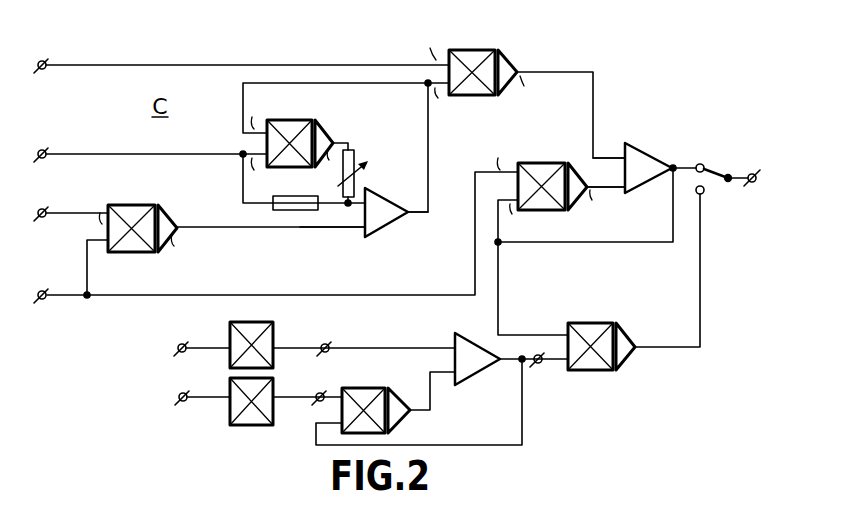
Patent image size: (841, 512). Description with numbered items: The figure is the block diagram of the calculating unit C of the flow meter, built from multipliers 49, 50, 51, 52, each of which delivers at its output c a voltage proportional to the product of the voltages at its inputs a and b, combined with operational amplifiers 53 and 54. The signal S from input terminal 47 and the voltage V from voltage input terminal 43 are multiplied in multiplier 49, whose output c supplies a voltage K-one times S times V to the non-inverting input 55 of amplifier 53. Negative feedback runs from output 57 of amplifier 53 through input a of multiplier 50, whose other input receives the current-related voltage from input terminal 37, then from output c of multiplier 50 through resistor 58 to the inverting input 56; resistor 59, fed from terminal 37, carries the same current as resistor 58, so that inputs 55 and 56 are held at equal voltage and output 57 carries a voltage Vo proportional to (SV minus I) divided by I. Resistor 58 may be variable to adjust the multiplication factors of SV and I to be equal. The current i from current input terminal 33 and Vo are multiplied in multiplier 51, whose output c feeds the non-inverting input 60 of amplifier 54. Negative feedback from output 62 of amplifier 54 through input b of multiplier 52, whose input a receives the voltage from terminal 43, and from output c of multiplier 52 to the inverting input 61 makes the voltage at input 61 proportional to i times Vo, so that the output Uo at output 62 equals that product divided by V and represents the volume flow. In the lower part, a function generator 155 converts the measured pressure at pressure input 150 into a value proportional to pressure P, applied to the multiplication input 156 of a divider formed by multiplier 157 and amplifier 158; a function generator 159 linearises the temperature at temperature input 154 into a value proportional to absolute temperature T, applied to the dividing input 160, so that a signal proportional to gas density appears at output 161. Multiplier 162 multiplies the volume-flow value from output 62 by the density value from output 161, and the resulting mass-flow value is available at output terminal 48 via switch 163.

The current input terminal 33 is at (46, 60).
The input terminal 37 is at (46, 149).
The input terminal 47 is at (47, 208).
The voltage input terminal 43 is at (47, 290).
The output terminal 48 is at (746, 171).
The multiplier 49 is at (145, 203).
The multiplier 50 is at (295, 119).
The multiplier 51 is at (478, 49).
The multiplier 52 is at (550, 161).
The operational amplifier 53 is at (393, 197).
The operational amplifier 54 is at (648, 155).
The non-inverting input of amplifier 53 55 is at (358, 228).
The inverting input of amplifier 53 56 is at (372, 183).
The output of amplifier 53 57 is at (410, 217).
The resistor 58 is at (340, 178).
The resistor 59 is at (313, 210).
The non-inverting input of amplifier 54 60 is at (607, 155).
The inverting input of amplifier 54 61 is at (613, 189).
The output of amplifier 54 62 is at (688, 162).
The pressure input 150 is at (178, 341).
The temperature input 154 is at (178, 396).
The function generator 155 is at (266, 338).
The multiplication input 156 is at (330, 338).
The multiplier 157 is at (367, 387).
The amplifier 158 is at (478, 336).
The function generator 159 is at (256, 415).
The dividing input 160 is at (317, 392).
The output of divider 161 is at (541, 366).
The multiplier 162 is at (595, 321).
The switch 163 is at (716, 180).